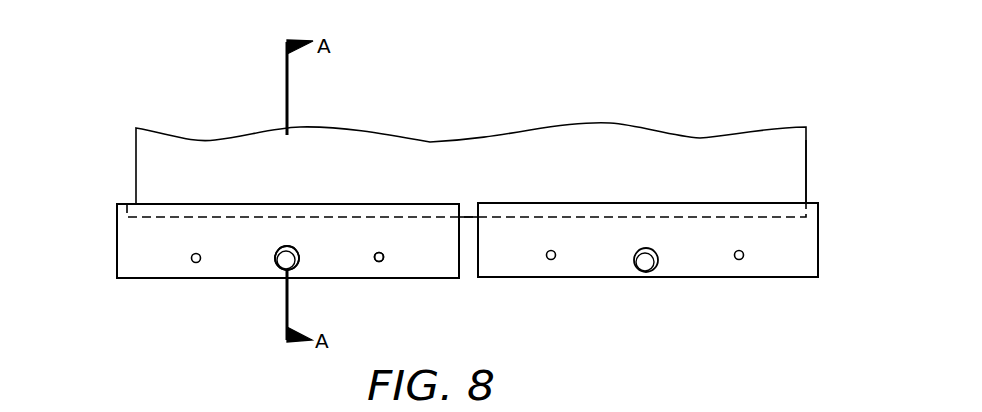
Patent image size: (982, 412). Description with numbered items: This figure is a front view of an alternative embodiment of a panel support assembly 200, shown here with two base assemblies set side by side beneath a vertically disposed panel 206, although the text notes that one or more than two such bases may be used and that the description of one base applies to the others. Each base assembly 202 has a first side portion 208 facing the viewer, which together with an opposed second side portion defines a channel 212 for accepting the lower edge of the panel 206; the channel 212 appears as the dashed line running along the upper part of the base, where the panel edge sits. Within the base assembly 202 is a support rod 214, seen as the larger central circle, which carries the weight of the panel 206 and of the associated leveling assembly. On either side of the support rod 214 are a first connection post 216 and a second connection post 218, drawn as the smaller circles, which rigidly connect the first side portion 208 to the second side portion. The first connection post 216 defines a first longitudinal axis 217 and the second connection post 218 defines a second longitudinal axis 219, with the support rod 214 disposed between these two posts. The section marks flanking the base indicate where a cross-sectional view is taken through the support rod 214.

The panel support assembly 200 is at (532, 124).
The base assembly 202 is at (117, 233).
The panel 206 is at (787, 165).
The first side portion 208 is at (131, 257).
The channel 212 is at (176, 205).
The support rod 214 is at (290, 247).
The first connection post 216 is at (183, 263).
The first longitudinal axis 217 is at (196, 262).
The second connection post 218 is at (375, 262).
The second longitudinal axis 219 is at (381, 262).